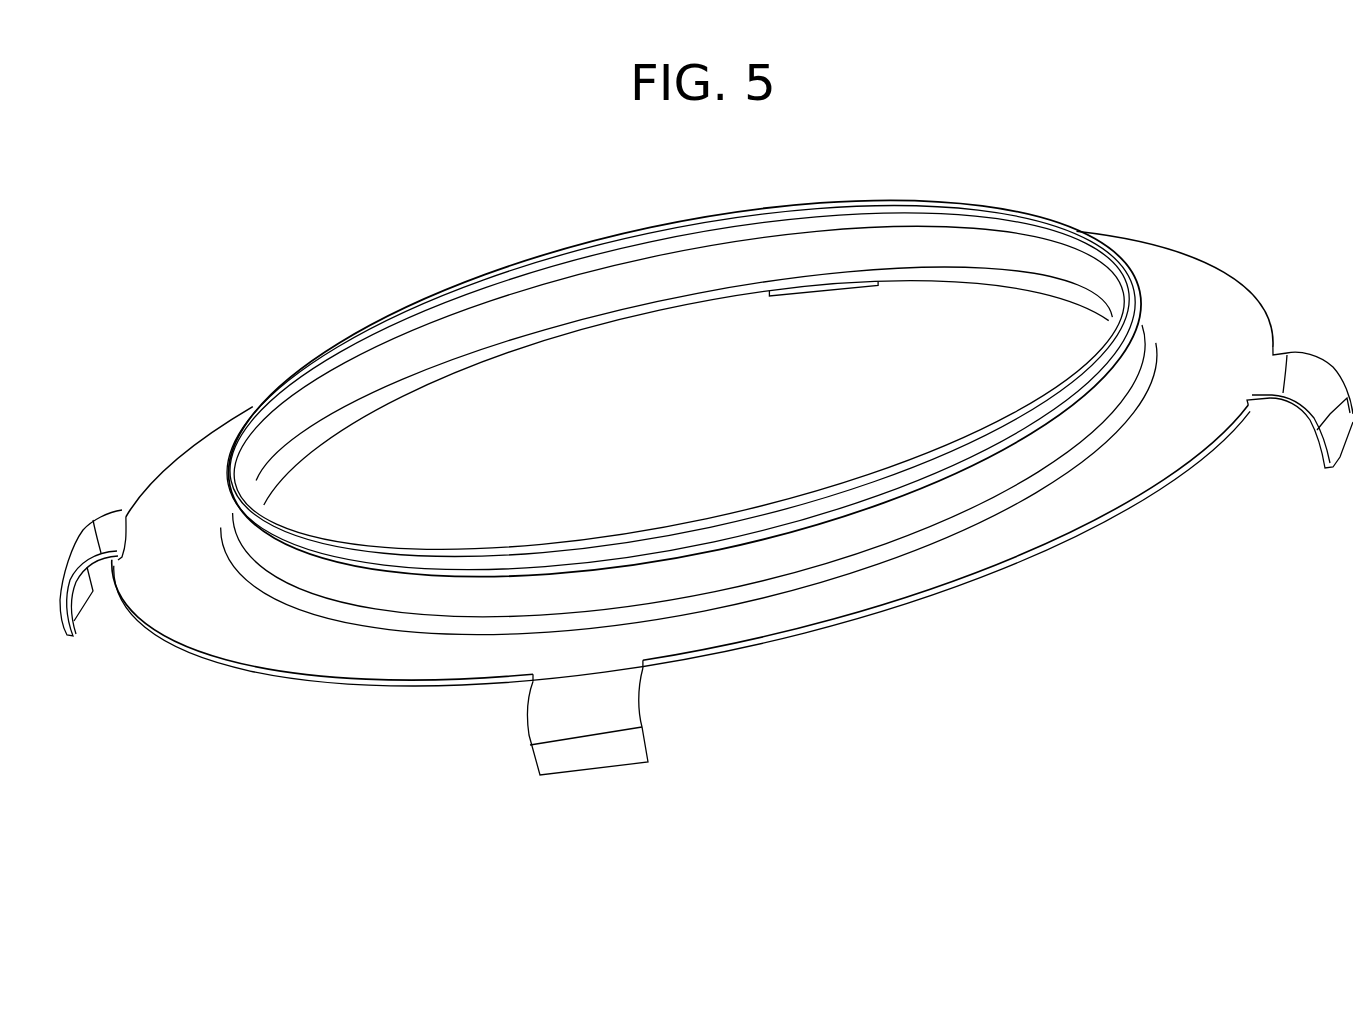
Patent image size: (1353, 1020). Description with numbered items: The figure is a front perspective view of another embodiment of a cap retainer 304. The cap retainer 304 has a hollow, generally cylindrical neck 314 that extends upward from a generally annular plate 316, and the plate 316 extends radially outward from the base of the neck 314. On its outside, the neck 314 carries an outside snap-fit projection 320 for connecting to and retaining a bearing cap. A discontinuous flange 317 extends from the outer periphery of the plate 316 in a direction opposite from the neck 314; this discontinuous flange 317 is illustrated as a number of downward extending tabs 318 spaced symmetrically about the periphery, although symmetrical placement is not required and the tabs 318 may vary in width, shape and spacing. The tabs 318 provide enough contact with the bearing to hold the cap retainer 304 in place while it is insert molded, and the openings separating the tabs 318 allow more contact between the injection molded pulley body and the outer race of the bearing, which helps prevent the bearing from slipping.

The cap retainer 304 is at (1037, 197).
The neck 314 is at (832, 554).
The plate 316 is at (1210, 336).
The discontinuous flange 317 is at (485, 721).
The tabs 318 is at (73, 603).
The outside snap-fit projection 320 is at (245, 512).